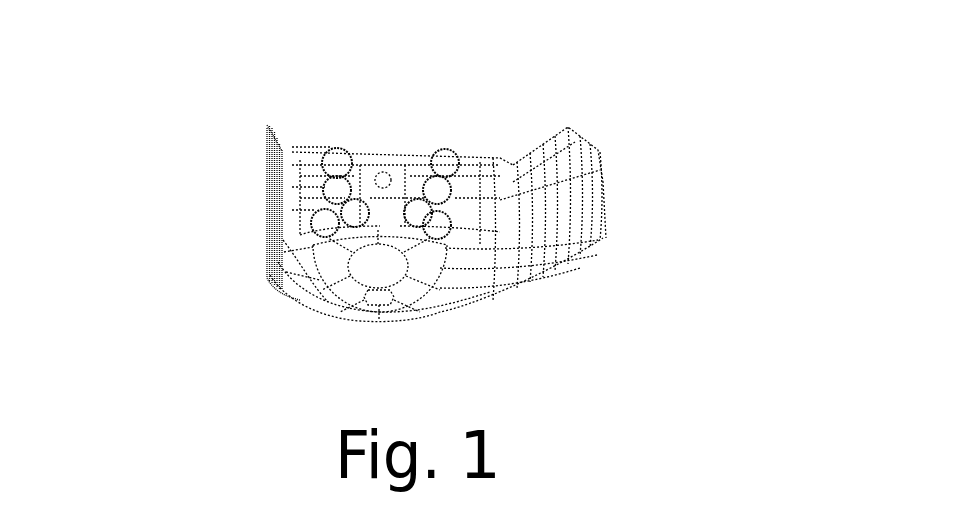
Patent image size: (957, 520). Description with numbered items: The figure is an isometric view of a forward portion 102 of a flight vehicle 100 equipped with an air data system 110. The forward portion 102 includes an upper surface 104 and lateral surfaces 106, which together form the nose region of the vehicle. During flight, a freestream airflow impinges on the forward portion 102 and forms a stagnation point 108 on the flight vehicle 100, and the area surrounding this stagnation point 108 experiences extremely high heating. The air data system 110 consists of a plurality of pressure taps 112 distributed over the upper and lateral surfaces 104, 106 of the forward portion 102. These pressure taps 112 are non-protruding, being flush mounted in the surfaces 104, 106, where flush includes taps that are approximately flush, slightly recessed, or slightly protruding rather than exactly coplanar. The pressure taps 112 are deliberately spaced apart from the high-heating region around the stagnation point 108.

The flight vehicle 100 is at (692, 73).
The forward portion 102 is at (148, 142).
The upper surface 104 is at (367, 160).
The lateral surfaces 106 is at (283, 160).
The stagnation point 108 is at (388, 303).
The air data system 110 is at (418, 93).
The pressure taps 112 is at (327, 167).